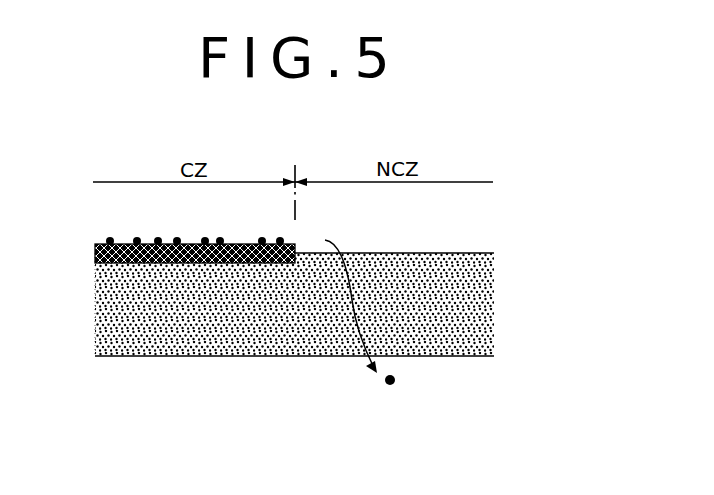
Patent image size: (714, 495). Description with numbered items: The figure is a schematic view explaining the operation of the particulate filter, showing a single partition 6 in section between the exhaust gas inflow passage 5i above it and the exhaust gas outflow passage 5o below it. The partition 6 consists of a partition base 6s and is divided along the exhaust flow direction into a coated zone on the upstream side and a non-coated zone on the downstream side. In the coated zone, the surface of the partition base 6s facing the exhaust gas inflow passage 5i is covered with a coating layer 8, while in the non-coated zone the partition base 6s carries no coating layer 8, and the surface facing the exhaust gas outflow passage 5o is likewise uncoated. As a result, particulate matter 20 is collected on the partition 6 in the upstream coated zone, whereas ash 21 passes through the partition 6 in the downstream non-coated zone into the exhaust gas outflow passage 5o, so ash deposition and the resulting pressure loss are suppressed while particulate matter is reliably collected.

The partition 6 is at (506, 284).
The partition base 6s is at (98, 298).
The coating layer 8 is at (95, 253).
The particulate matter 20 is at (234, 240).
The ash 21 is at (383, 378).
The exhaust gas inflow passage 5i is at (466, 219).
The exhaust gas outflow passage 5o is at (466, 431).